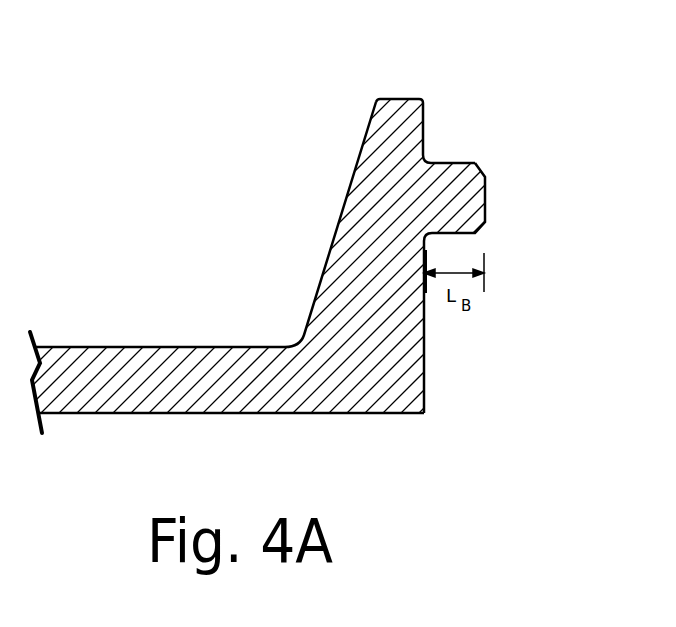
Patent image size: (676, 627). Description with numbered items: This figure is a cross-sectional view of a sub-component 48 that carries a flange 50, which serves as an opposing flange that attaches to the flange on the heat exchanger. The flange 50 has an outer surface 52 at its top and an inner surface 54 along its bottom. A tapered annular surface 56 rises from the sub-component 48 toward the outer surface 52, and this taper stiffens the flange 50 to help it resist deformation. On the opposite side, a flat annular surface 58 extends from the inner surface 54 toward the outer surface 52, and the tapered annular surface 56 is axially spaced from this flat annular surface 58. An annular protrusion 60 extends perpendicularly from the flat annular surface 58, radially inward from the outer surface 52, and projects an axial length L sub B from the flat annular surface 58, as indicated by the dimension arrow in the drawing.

The sub-component 48 is at (138, 383).
The flange 50 is at (385, 378).
The outer surface 52 is at (400, 98).
The inner surface 54 is at (328, 413).
The tapered annular surface 56 is at (335, 248).
The flat annular surface 58 is at (424, 335).
The annular protrusion 60 is at (485, 193).